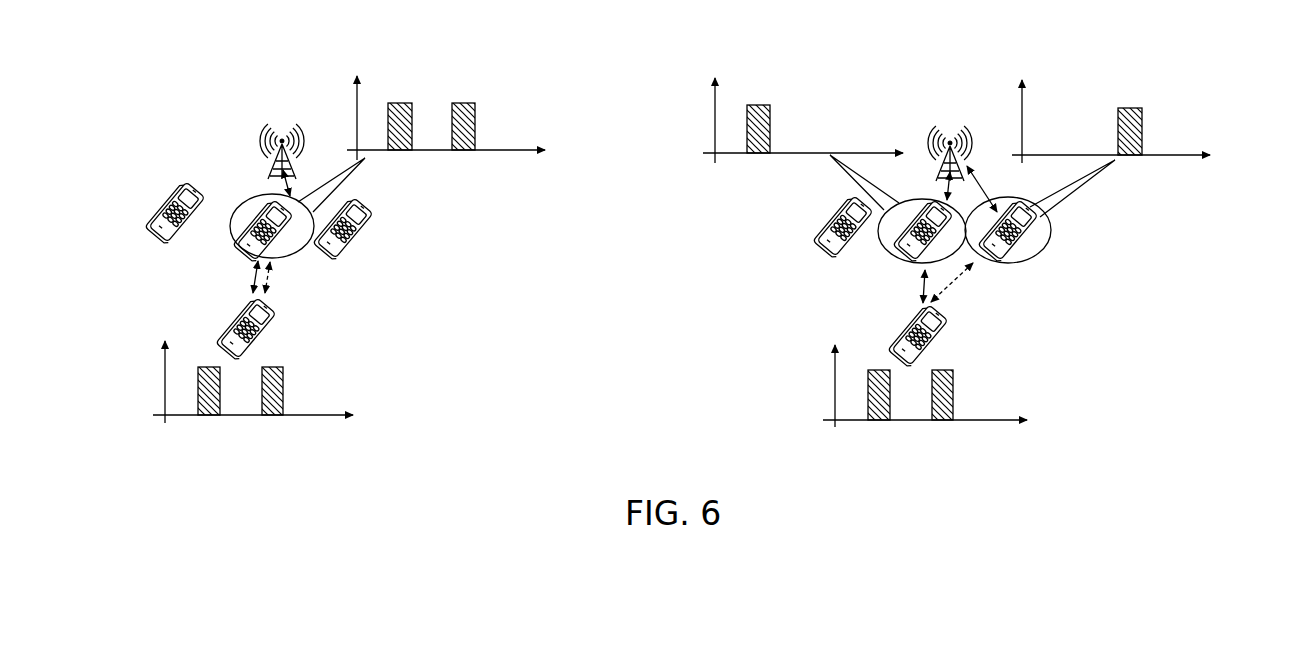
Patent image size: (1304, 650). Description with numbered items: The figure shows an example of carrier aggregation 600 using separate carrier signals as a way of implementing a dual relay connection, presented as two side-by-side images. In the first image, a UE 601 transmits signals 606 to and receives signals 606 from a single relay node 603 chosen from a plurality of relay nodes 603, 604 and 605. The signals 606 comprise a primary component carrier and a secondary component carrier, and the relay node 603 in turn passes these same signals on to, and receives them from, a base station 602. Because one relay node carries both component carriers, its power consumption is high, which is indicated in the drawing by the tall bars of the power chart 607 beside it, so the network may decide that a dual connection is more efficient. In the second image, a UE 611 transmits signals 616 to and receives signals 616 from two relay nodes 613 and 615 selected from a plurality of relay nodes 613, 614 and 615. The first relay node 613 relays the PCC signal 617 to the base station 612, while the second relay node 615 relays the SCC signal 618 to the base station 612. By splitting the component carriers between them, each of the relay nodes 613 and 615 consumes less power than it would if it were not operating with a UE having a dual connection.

The carrier aggregation 600 is at (1220, 31).
The UE 601 is at (270, 328).
The base station 602 is at (282, 136).
The relay node 603 is at (260, 216).
The relay node 604 is at (174, 222).
The relay node 605 is at (362, 228).
The signals 606 is at (253, 400).
The power consumption chart of relay UE 603 607 is at (446, 118).
The UE 611 is at (940, 335).
The base station 612 is at (949, 139).
The first relay node 613 is at (913, 220).
The relay node 614 is at (841, 239).
The second relay node 615 is at (1030, 240).
The signals 616 is at (925, 404).
The PCC signal 617 is at (803, 120).
The SCC signal 618 is at (1111, 121).